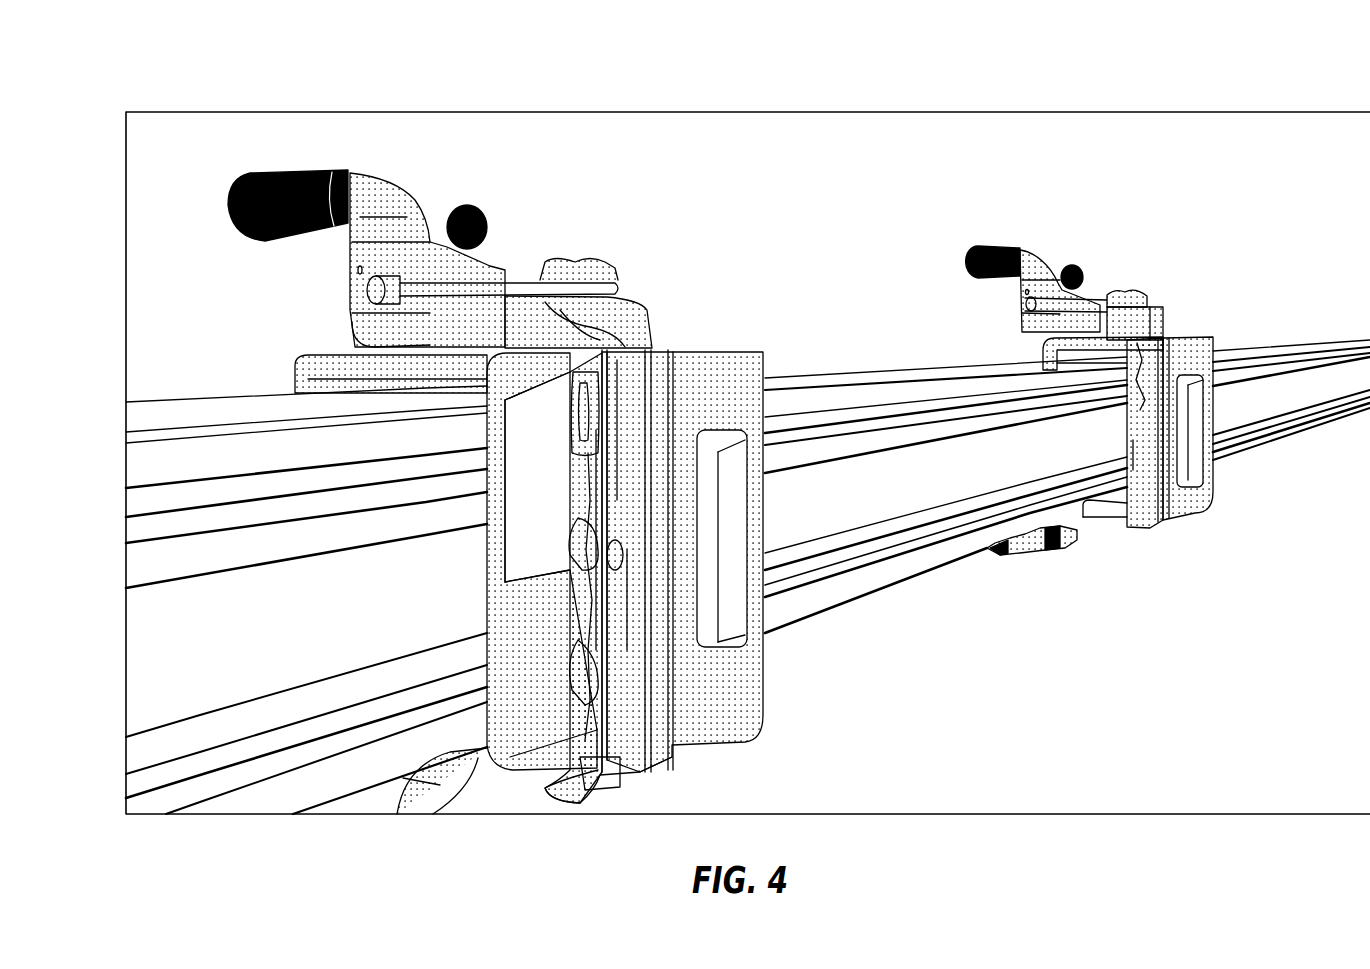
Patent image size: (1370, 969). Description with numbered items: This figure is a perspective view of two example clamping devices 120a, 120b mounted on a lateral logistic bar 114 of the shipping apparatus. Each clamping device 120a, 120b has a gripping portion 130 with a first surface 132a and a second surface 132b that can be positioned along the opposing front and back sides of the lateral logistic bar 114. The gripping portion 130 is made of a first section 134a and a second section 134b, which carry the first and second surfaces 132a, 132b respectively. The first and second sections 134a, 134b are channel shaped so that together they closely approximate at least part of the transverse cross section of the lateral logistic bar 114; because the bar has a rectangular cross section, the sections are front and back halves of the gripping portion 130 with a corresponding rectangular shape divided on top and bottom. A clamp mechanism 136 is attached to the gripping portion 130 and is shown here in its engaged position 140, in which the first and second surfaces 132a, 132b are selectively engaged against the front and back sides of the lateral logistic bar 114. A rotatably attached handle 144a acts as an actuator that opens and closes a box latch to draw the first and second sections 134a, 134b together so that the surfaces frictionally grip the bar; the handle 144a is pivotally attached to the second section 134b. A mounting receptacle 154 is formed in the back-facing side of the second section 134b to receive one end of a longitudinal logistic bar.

The lateral logistic bar 114 is at (887, 553).
The clamping device 120a is at (643, 352).
The clamping device 120b is at (1187, 337).
The gripping portion 130 is at (510, 668).
The first surface 132a is at (292, 360).
The second surface 132b is at (533, 617).
The first section 134a is at (1022, 347).
The second section 134b is at (1213, 347).
The clamp mechanism 136 is at (573, 273).
The engaged position 140 is at (1143, 292).
The handle 144a is at (288, 172).
The mounting receptacle 154 is at (763, 618).